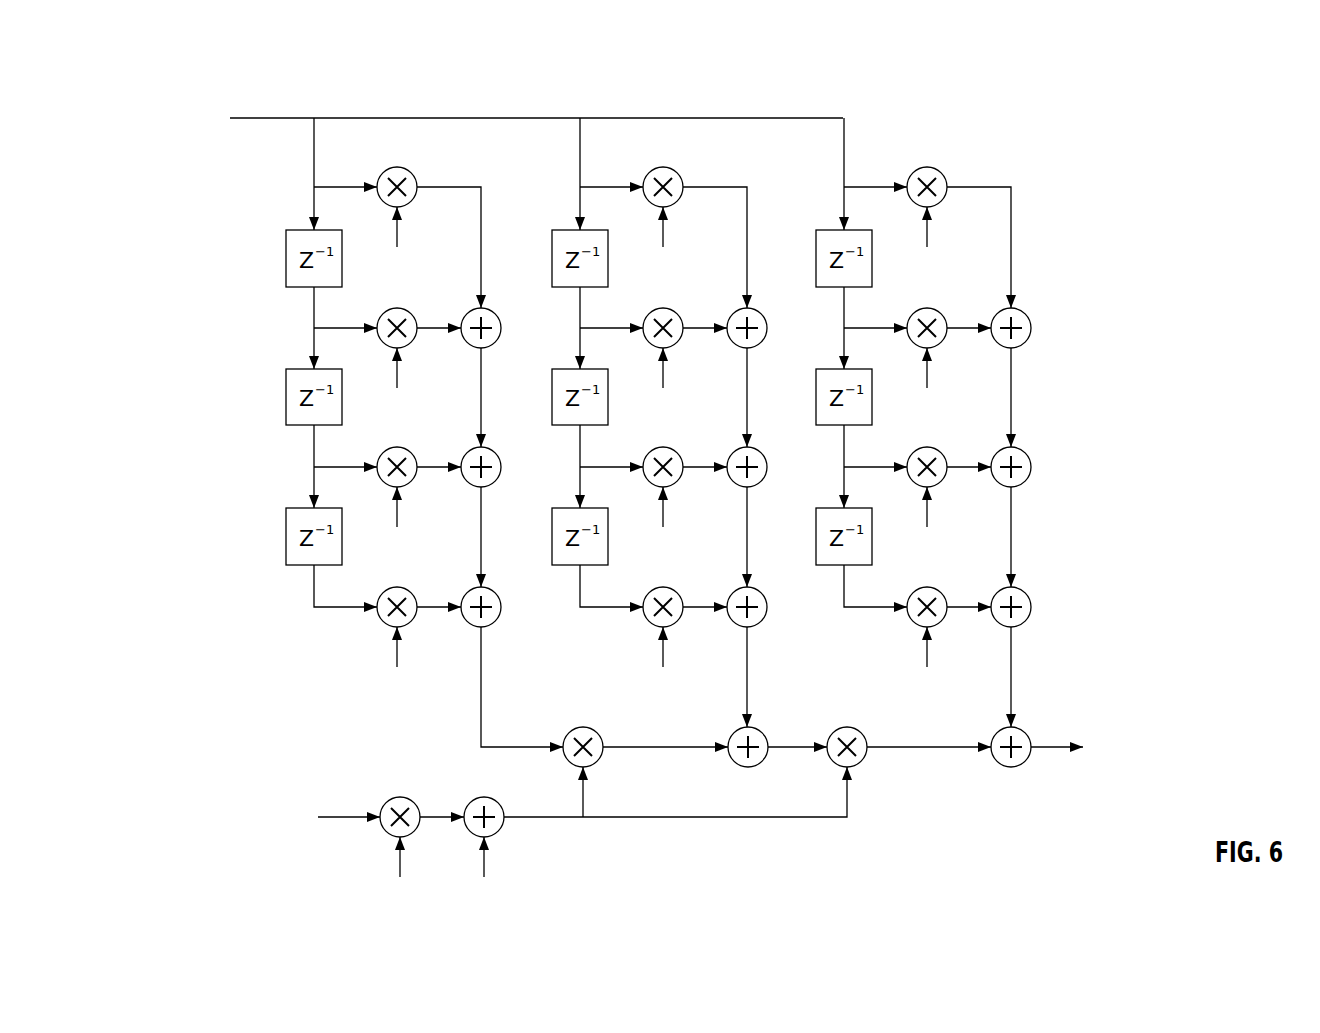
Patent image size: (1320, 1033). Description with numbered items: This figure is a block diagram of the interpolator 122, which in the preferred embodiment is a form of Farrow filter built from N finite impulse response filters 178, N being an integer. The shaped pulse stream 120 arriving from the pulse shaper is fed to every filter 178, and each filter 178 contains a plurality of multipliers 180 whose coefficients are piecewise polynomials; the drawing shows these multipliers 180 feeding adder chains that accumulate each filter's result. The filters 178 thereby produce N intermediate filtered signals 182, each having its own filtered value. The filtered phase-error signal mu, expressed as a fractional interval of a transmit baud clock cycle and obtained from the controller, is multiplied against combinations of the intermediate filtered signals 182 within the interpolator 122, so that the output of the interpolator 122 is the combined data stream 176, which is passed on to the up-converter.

The shaped pulse stream 120 is at (260, 118).
The finite impulse response (FIR) filter 178 is at (397, 102).
The multiplier 180 is at (413, 314).
The intermediate filtered signal 182 is at (486, 663).
The combined data stream 176 is at (1057, 748).
The interpolator 122 is at (1167, 856).